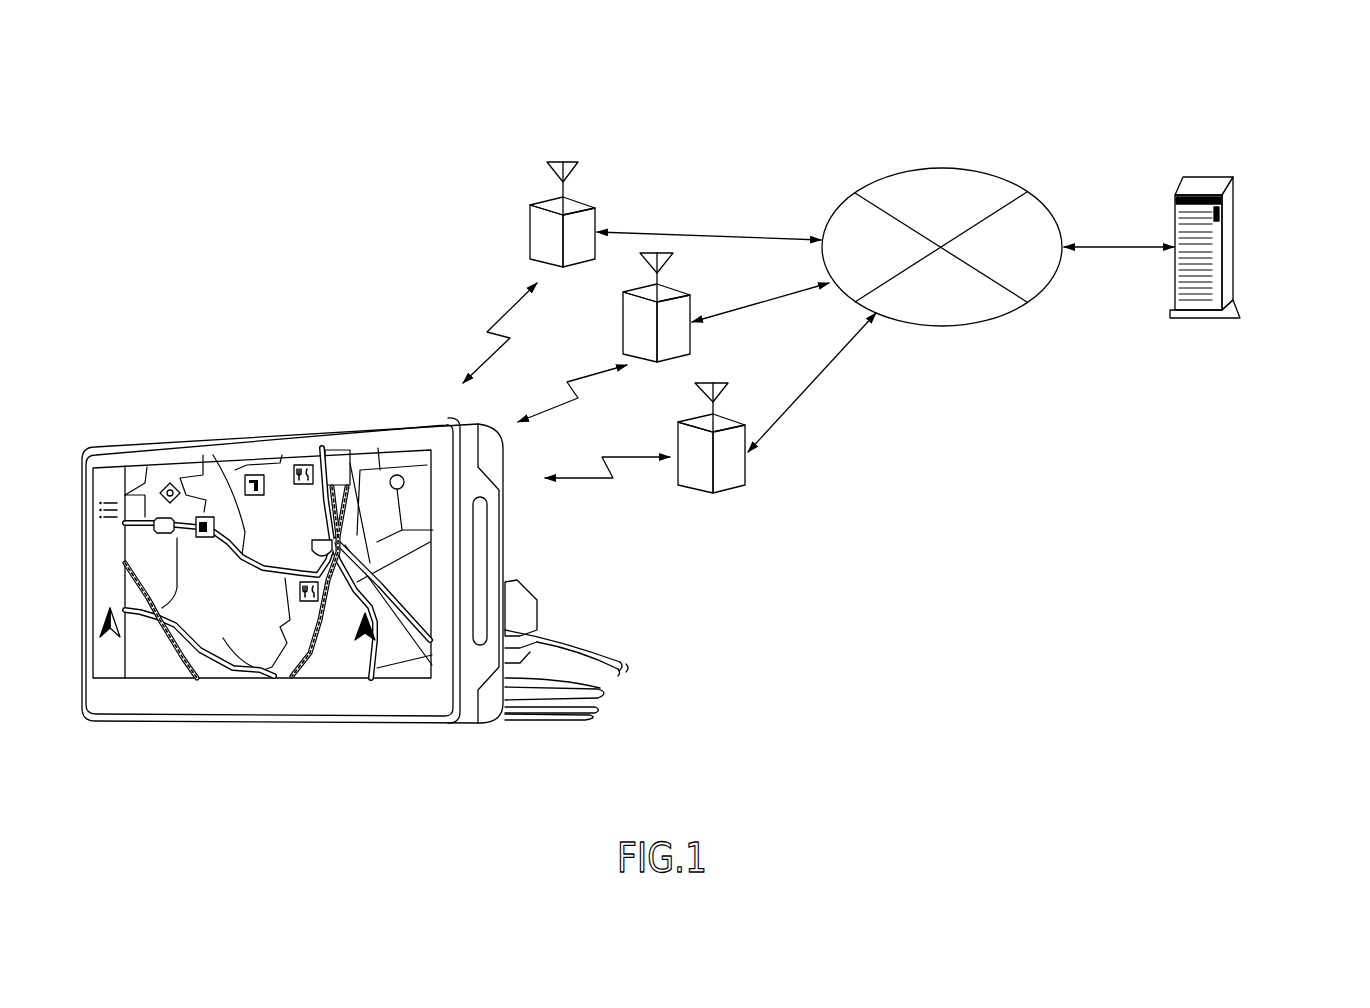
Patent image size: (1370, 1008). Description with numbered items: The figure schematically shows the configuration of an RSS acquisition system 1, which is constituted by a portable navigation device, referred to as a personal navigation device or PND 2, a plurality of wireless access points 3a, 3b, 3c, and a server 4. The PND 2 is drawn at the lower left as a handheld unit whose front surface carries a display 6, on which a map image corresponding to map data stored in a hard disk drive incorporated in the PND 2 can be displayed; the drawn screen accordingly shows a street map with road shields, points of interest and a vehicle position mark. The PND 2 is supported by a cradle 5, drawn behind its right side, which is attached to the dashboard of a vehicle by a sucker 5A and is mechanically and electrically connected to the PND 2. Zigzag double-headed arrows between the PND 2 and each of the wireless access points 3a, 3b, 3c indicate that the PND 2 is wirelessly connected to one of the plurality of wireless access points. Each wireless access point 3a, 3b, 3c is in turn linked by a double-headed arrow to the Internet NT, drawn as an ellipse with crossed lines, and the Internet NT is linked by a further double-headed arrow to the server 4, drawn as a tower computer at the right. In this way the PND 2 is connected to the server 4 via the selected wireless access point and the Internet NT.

The RSS acquisition system 1 is at (595, 82).
The personal navigation device (PND) 2 is at (190, 401).
The wireless access point 3a is at (578, 198).
The wireless access point 3b is at (677, 287).
The wireless access point 3c is at (730, 419).
The server 4 is at (1213, 175).
The cradle 5 is at (513, 580).
The sucker 5A is at (596, 713).
The display 6 is at (160, 666).
The Internet NT is at (937, 168).